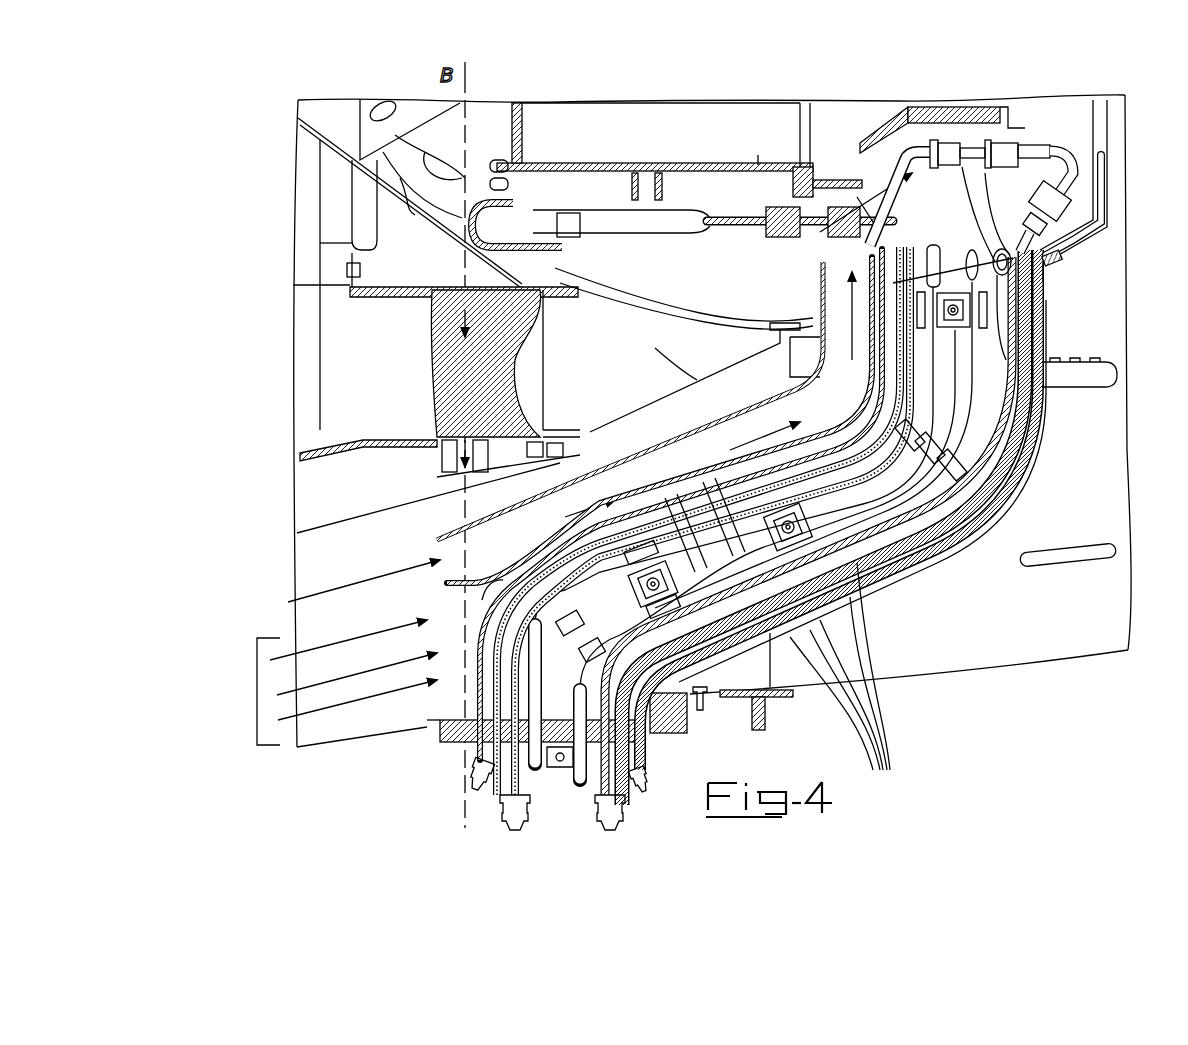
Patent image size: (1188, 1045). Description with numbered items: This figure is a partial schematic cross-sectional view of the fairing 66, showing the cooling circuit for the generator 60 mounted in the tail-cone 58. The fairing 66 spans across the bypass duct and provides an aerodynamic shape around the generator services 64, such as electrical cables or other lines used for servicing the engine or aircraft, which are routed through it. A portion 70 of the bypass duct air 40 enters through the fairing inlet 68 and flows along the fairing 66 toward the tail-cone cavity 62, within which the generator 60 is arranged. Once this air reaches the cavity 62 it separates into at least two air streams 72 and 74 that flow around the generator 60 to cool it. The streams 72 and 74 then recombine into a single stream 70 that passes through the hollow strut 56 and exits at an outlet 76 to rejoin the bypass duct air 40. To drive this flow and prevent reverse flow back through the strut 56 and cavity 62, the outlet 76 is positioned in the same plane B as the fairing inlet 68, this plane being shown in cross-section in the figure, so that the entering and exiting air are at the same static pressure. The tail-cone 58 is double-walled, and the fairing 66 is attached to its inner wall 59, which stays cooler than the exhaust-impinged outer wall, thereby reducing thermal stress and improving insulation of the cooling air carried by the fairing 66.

The bypass duct air 40 is at (257, 690).
The hollow strut 56 is at (443, 343).
The tail-cone 58 is at (1080, 190).
The inner wall 59 is at (1087, 213).
The generator 60 is at (652, 140).
The cavity 62 is at (937, 185).
The generator services 64 is at (832, 681).
The fairing 66 is at (540, 478).
The fairing inlet 68 is at (440, 563).
The cooling air stream 70 is at (360, 585).
The air stream 72 is at (695, 197).
The air stream 74 is at (877, 273).
The outlet 76 is at (580, 455).